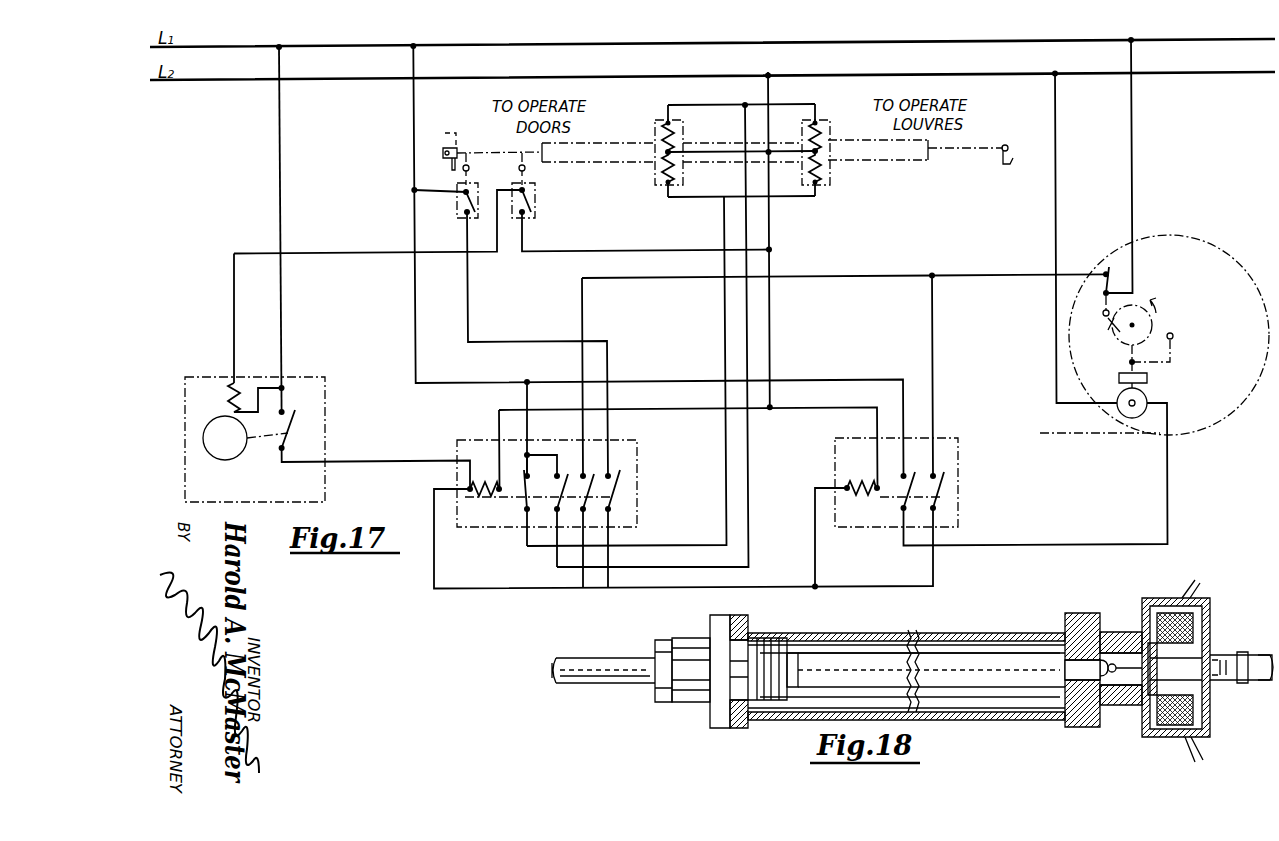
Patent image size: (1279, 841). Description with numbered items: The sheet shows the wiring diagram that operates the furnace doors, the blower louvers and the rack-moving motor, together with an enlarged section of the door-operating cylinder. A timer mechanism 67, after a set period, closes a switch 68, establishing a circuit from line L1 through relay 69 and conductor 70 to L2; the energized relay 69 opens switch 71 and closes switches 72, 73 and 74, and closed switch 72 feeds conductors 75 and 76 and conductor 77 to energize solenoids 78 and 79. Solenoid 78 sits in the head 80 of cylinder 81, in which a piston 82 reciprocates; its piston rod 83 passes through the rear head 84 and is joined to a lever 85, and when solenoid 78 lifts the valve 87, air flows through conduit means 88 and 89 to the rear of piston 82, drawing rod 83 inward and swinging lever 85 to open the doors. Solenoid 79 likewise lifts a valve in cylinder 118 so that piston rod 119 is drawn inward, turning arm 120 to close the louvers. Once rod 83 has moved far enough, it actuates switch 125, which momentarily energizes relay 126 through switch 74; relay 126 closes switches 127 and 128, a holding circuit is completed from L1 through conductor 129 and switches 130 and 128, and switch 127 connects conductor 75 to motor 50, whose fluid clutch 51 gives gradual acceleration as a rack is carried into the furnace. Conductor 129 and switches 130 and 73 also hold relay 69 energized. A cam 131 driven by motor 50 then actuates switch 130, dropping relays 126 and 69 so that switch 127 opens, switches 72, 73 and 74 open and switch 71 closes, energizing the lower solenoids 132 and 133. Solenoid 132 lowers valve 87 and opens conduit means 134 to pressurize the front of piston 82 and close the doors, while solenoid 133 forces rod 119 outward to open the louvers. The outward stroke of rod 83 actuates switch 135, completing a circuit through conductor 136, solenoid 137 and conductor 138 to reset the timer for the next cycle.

In FIG. 17, the conductor 136 is at (281, 188).
In FIG. 17, the conductor 138 is at (330, 252).
In FIG. 17, the solenoid 137 is at (222, 383).
In FIG. 17, the timer mechanism 67 is at (183, 417).
In FIG. 17, the switch 68 is at (291, 432).
In FIG. 17, the lever 85 is at (447, 133).
In FIG. 17, the piston rod 83 is at (505, 150).
In FIG. 18, the piston rod 83 is at (592, 677).
In FIG. 17, the solenoid 78 is at (668, 123).
In FIG. 18, the solenoid 78 is at (1212, 612).
In FIG. 17, the solenoid 79 is at (818, 126).
In FIG. 17, the cylinder 81 is at (598, 163).
In FIG. 18, the cylinder 81 is at (997, 632).
In FIG. 17, the lower solenoid 132 is at (670, 180).
In FIG. 17, the lower solenoid 133 is at (820, 178).
In FIG. 17, the cylinder 118 is at (900, 162).
In FIG. 17, the piston rod 119 is at (958, 160).
In FIG. 17, the arm 120 is at (1016, 166).
In FIG. 17, the conductor 129 is at (1132, 157).
In FIG. 17, the switch 125 is at (460, 198).
In FIG. 17, the switch 135 is at (535, 198).
In FIG. 17, the switch 130 is at (1101, 277).
In FIG. 17, the cam 131 is at (1080, 327).
In FIG. 17, the fluid clutch 51 is at (1148, 377).
In FIG. 17, the motor 50 is at (1147, 392).
In FIG. 17, the conductor 75 is at (416, 324).
In FIG. 17, the conductor 70 is at (770, 300).
In FIG. 17, the conductor 76 is at (542, 453).
In FIG. 17, the conductor 77 is at (750, 443).
In FIG. 17, the switch 74 is at (613, 505).
In FIG. 17, the switch 73 is at (587, 503).
In FIG. 17, the switch 72 is at (560, 503).
In FIG. 17, the switch 71 is at (527, 492).
In FIG. 17, the relay 69 is at (487, 503).
In FIG. 17, the switch 128 is at (937, 507).
In FIG. 17, the relay 126 is at (860, 510).
In FIG. 17, the switch 127 is at (900, 507).
In FIG. 18, the conduit means 134 is at (1113, 655).
In FIG. 18, the head 80 is at (1142, 610).
In FIG. 18, the piston 82 is at (777, 667).
In FIG. 18, the rear head 84 is at (713, 715).
In FIG. 18, the conduit means 88 is at (1262, 683).
In FIG. 18, the conduit means 89 is at (988, 713).
In FIG. 18, the valve 87 is at (1137, 703).